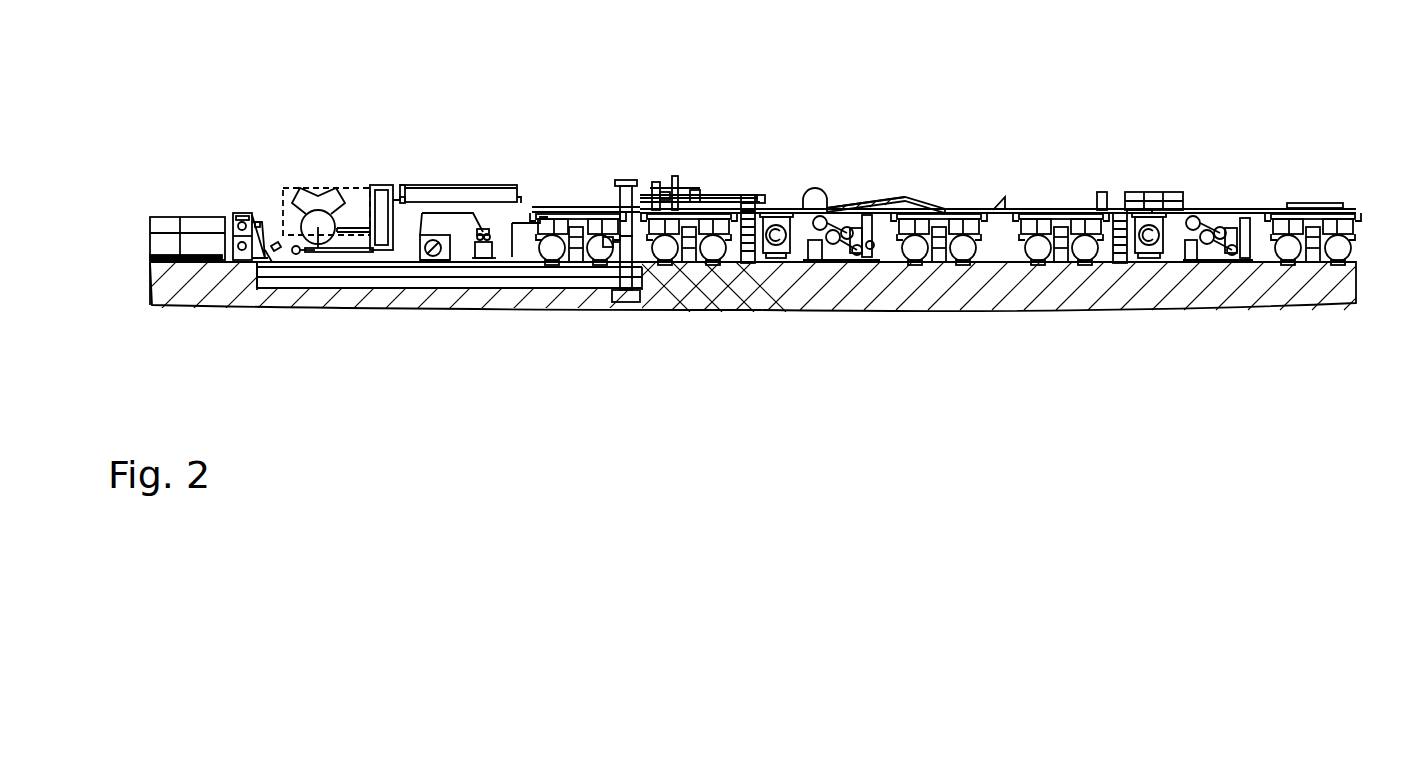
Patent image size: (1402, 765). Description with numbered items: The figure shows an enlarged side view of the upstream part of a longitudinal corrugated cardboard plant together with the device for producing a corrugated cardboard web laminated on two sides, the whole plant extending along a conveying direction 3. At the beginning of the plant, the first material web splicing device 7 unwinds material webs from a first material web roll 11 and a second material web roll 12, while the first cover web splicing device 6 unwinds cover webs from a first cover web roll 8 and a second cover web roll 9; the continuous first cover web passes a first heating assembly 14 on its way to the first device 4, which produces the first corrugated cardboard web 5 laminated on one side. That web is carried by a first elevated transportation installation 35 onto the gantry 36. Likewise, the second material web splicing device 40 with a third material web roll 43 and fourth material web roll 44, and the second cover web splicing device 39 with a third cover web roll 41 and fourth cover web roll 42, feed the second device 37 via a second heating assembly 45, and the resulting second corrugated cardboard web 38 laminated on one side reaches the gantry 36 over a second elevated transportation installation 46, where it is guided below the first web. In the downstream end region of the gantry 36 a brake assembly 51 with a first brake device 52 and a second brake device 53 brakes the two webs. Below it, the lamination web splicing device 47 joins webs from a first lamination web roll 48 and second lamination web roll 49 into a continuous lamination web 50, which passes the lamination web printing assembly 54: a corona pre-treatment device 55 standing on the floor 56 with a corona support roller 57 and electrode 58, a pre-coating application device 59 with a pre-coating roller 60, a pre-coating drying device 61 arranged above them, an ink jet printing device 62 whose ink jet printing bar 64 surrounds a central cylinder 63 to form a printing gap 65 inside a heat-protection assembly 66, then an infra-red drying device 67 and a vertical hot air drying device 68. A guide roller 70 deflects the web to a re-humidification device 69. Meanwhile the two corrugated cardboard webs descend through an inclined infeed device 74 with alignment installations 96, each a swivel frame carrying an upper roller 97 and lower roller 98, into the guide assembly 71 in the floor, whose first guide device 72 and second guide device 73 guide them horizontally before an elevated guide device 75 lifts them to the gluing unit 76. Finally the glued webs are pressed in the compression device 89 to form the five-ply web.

The conveying direction 3 is at (765, 176).
The first device for producing a corrugated cardboard web laminated on one side 4 is at (1230, 265).
The first corrugated cardboard web laminated on one side 5 is at (263, 243).
The first cover web splicing device 6 is at (1062, 264).
The first material web splicing device 7 is at (1313, 267).
The first cover web roll 8 is at (1040, 268).
The second cover web roll 9 is at (1086, 265).
The first material web roll 11 is at (1289, 265).
The second material web roll 12 is at (1338, 265).
The first heating assembly 14 is at (1150, 258).
The first elevated transportation installation 35 is at (1193, 190).
The gantry 36 is at (843, 193).
The second device for producing a corrugated cardboard web laminated on one side 37 is at (870, 270).
The second corrugated cardboard web laminated on one side 38 is at (255, 222).
The second cover web splicing device 39 is at (735, 262).
The second material web splicing device 40 is at (941, 268).
The third cover web roll 41 is at (713, 265).
The fourth cover web roll 42 is at (748, 265).
The third material web roll 43 is at (916, 265).
The fourth material web roll 44 is at (965, 265).
The second heating assembly 45 is at (777, 258).
The second elevated transportation installation 46 is at (866, 184).
The lamination web splicing device 47 is at (576, 262).
The first lamination web roll 48 is at (550, 265).
The second lamination web roll 49 is at (601, 265).
The continuous lamination web 50 is at (525, 212).
The brake assembly 51 is at (673, 178).
The first brake device 52 is at (688, 188).
The second brake device 53 is at (702, 202).
The lamination web printing assembly 54 is at (458, 183).
The corona pre-treatment device 55 is at (425, 262).
The floor 56 is at (690, 262).
The corona support roller 57 is at (318, 240).
The electrode 58 is at (424, 214).
The pre-coating application device 59 is at (462, 258).
The pre-coating roller 60 is at (490, 222).
The pre-coating drying device 61 is at (485, 186).
The ink jet printing device 62 is at (317, 187).
The central cylinder 63 is at (275, 250).
The ink jet printing bar 64 is at (310, 195).
The printing gap 65 is at (337, 195).
The heat-protection assembly 66 is at (272, 243).
The infra-red drying device 67 is at (296, 255).
The hot air drying device 68 is at (380, 186).
The re-humidification device 69 is at (215, 262).
The guide roller 70 is at (257, 265).
The guide assembly 71 is at (448, 296).
The first guide device 72 is at (518, 272).
The second guide device 73 is at (477, 290).
The inclined infeed device 74 is at (665, 265).
The elevated guide device 75 is at (170, 285).
The gluing unit 76 is at (237, 208).
The compression device 89 is at (200, 210).
The alignment installation 96 is at (605, 235).
The upper roller 97 is at (628, 222).
The lower roller 98 is at (634, 302).